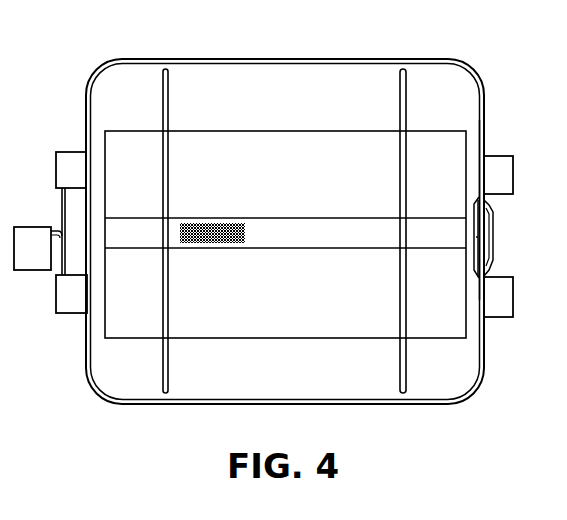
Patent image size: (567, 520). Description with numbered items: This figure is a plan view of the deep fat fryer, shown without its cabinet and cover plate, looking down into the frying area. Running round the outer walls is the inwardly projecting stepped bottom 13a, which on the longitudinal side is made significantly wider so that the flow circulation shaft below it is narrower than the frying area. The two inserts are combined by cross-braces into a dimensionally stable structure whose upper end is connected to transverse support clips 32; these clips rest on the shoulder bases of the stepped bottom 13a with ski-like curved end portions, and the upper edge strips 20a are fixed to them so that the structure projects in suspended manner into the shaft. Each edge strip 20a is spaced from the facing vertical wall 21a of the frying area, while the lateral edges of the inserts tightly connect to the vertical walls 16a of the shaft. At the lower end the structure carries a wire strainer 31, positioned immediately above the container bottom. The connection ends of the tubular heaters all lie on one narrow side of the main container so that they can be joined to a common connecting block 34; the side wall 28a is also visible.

The stepped bottom 13a is at (223, 75).
The vertical wall of the frying area 21a is at (333, 62).
The upper edge strip 20a is at (325, 142).
The side wall 28a is at (479, 138).
The transverse support clip 32 is at (165, 189).
The wire strainer 31 is at (212, 232).
The vertical wall of the shaft 16a is at (462, 235).
The connecting block 34 is at (27, 263).